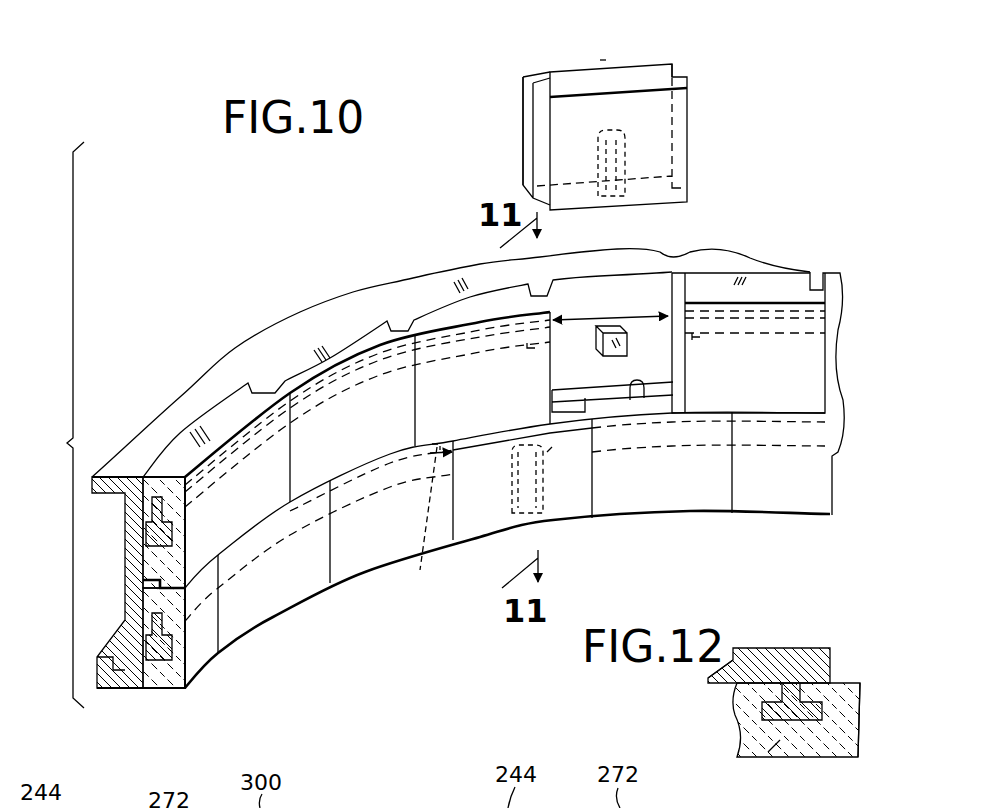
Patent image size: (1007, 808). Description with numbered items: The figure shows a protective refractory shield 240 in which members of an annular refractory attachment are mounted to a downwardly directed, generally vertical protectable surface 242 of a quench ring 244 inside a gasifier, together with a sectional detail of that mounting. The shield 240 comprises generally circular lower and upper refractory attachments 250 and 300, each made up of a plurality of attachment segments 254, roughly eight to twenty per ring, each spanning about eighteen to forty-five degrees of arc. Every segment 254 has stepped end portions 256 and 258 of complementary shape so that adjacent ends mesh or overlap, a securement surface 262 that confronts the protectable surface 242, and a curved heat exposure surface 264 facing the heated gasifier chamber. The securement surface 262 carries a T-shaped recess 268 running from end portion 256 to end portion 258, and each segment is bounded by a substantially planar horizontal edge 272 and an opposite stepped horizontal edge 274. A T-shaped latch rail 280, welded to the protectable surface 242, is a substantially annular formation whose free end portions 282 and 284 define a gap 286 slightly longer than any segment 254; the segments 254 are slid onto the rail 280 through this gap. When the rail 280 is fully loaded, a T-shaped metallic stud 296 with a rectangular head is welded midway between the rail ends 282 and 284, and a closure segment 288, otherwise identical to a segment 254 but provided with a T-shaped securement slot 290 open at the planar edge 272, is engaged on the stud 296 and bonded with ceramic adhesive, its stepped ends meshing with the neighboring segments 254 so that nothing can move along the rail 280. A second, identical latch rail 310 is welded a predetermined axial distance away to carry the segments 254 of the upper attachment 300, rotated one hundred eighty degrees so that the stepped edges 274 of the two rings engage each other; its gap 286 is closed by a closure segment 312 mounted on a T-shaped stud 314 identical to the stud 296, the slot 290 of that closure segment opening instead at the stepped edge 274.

In FIG. 10, the protective refractory shield 240 is at (50, 425).
In FIG. 10, the protectable surface 242 is at (147, 580).
In FIG. 12, the protectable surface 242 is at (718, 688).
In FIG. 10, the quench ring 244 is at (237, 350).
In FIG. 10, the lower refractory attachment 250 is at (833, 509).
In FIG. 10, the attachment segment 254 is at (460, 291).
In FIG. 12, the attachment segment 254 is at (866, 737).
In FIG. 10, the stepped end portion 256 is at (688, 108).
In FIG. 10, the stepped end portion 258 is at (523, 110).
In FIG. 12, the securement surface 262 is at (847, 648).
In FIG. 10, the heat exposure surface 264 is at (374, 451).
In FIG. 12, the heat exposure surface 264 is at (838, 757).
In FIG. 12, the T-shaped recess 268 is at (768, 752).
In FIG. 10, the horizontal edge 272 is at (648, 70).
In FIG. 10, the horizontal edge 274 is at (615, 270).
In FIG. 10, the T-shaped latch rail 280 is at (160, 663).
In FIG. 12, the T-shaped latch rail 280 is at (810, 745).
In FIG. 10, the rail free end portion 282 is at (530, 346).
In FIG. 10, the rail free end portion 284 is at (692, 337).
In FIG. 10, the gap 286 is at (628, 317).
In FIG. 10, the closure segment 288 is at (603, 55).
In FIG. 10, the T-shaped securement slot 290 is at (627, 163).
In FIG. 10, the T-shaped metallic stud 296 is at (547, 452).
In FIG. 10, the upper refractory attachment 300 is at (848, 315).
In FIG. 10, the latch rail 310 is at (160, 500).
In FIG. 10, the closure segment 312 is at (552, 523).
In FIG. 10, the T-shaped stud 314 is at (620, 358).